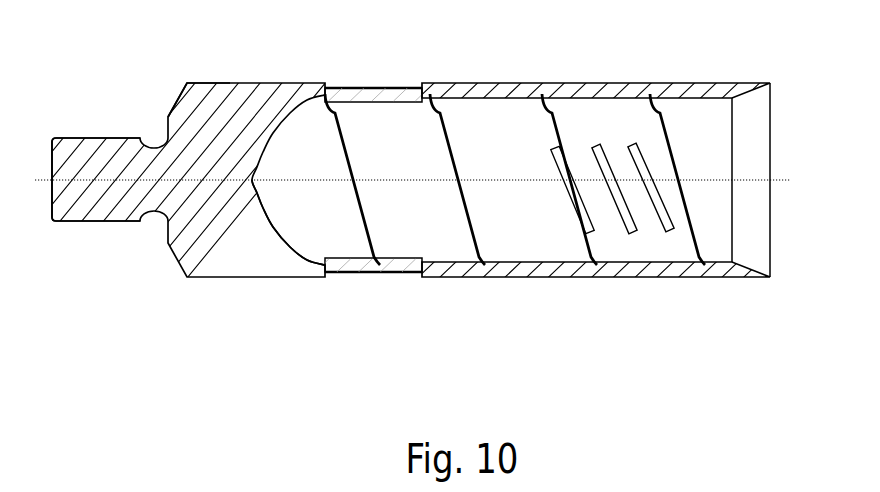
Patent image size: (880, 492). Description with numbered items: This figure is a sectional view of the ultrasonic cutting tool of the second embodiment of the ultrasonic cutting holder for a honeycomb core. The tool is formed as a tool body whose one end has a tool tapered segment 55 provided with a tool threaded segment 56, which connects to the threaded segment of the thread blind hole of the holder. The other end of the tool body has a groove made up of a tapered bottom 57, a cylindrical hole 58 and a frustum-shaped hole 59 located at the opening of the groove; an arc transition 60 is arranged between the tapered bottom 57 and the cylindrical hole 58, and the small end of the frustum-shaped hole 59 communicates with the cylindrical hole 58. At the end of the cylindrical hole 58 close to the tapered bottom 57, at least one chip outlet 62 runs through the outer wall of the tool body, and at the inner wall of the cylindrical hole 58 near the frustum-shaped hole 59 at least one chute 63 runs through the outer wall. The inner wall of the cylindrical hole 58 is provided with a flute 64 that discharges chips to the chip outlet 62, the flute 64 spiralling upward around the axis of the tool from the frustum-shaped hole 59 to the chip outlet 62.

The tool tapered segment 55 is at (178, 92).
The tool threaded segment 56 is at (98, 137).
The tapered bottom 57 is at (238, 278).
The cylindrical hole 58 is at (458, 278).
The frustum-shaped hole 59 is at (745, 80).
The arc transition 60 is at (297, 278).
The chip outlet 62 is at (358, 87).
The chute 63 is at (592, 147).
The flute 64 is at (434, 88).